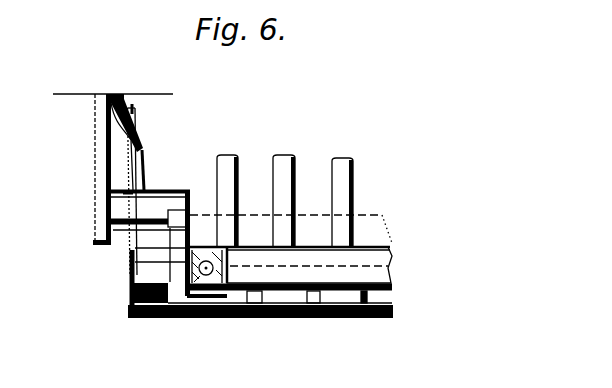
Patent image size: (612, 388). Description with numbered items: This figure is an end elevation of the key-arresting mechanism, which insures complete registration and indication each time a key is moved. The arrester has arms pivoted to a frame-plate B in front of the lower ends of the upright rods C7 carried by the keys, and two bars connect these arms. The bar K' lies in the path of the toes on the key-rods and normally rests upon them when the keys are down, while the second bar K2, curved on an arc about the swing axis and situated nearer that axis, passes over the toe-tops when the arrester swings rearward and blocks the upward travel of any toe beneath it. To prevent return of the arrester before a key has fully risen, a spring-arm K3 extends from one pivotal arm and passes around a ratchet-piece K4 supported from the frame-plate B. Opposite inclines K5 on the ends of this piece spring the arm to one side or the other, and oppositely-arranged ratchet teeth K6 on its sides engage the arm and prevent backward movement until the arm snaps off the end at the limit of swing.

The frame-plate B is at (95, 163).
The spring-arm K3 is at (134, 110).
The ratchet-piece K4 is at (142, 176).
The incline K5 is at (140, 135).
The ratchet tooth K6 is at (144, 152).
The bar K' is at (290, 275).
The bar K2 is at (392, 309).
The upright rod C7 is at (277, 191).